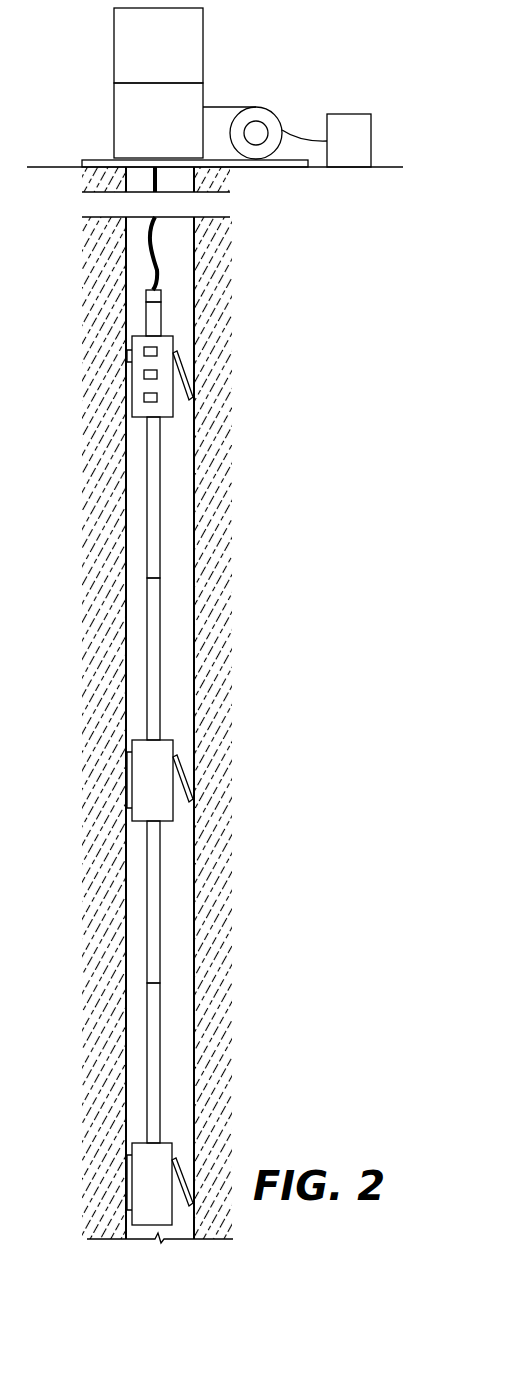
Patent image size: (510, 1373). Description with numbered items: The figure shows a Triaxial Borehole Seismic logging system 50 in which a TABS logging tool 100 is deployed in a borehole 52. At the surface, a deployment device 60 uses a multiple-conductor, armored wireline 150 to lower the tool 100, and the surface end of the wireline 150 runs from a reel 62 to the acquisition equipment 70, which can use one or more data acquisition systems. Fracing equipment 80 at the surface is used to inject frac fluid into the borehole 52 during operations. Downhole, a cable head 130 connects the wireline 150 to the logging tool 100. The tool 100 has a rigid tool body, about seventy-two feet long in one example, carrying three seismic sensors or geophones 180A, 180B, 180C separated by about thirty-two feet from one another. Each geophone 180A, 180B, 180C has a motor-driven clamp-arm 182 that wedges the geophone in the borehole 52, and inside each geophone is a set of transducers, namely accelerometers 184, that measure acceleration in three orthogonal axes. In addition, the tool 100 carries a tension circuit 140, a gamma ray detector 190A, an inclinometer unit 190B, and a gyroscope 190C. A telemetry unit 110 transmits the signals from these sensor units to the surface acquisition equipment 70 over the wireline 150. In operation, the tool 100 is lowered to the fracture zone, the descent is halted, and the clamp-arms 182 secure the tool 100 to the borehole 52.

The Triaxial Borehole Seismic (TABS) logging system 50 is at (65, 60).
The fracing equipment 80 is at (203, 30).
The deployment device 60 is at (203, 92).
The reel 62 is at (268, 108).
The acquisition equipment 70 is at (362, 114).
The borehole 52 is at (194, 259).
The TABS logging tool 100 is at (173, 696).
The wireline 150 is at (147, 257).
The tension circuit 140 is at (161, 297).
The cable head 130 is at (146, 312).
The seismic sensor (geophone) 180A is at (153, 378).
The seismic sensor (geophone) 180B is at (132, 776).
The seismic sensor (geophone) 180C is at (132, 1182).
The clamp-arm 182 is at (192, 392).
The transducers (accelerometers) 184 is at (144, 397).
The gamma ray detector 190A is at (161, 483).
The inclinometer unit 190B is at (161, 908).
The gyroscope 190C is at (161, 1077).
The telemetry unit 110 is at (147, 600).